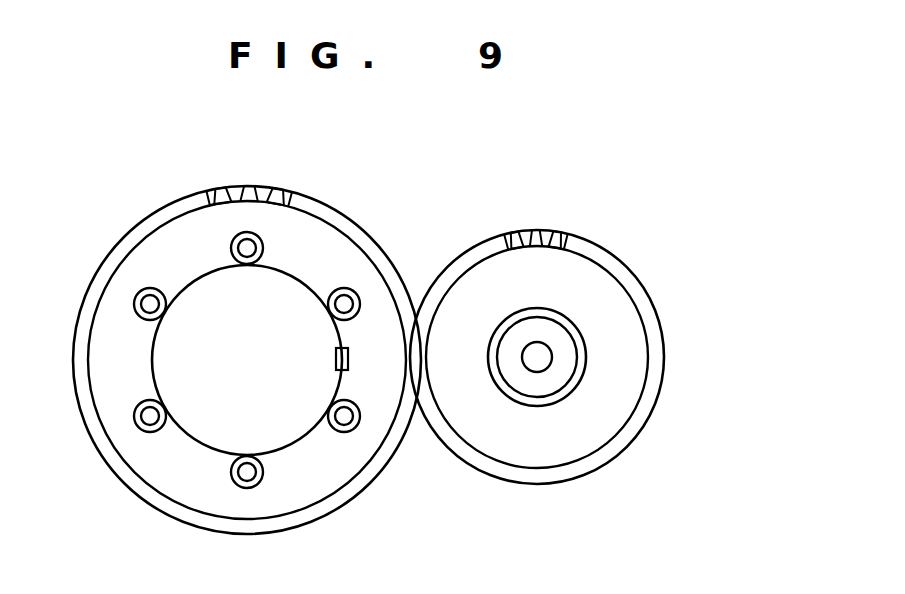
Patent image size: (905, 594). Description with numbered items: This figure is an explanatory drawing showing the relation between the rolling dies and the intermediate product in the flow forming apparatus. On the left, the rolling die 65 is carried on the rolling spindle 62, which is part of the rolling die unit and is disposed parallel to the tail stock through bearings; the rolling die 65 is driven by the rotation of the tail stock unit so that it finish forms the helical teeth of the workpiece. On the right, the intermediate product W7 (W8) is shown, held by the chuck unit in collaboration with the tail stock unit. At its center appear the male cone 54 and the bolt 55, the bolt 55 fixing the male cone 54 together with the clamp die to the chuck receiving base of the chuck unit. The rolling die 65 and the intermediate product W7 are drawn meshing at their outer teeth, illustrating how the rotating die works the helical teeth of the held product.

The rolling die 65 is at (332, 245).
The rolling spindle 62 is at (230, 400).
The intermediate product W7 is at (596, 331).
The workpiece gear W8 is at (592, 282).
The male cone 54 is at (567, 343).
The bolt 55 is at (542, 360).